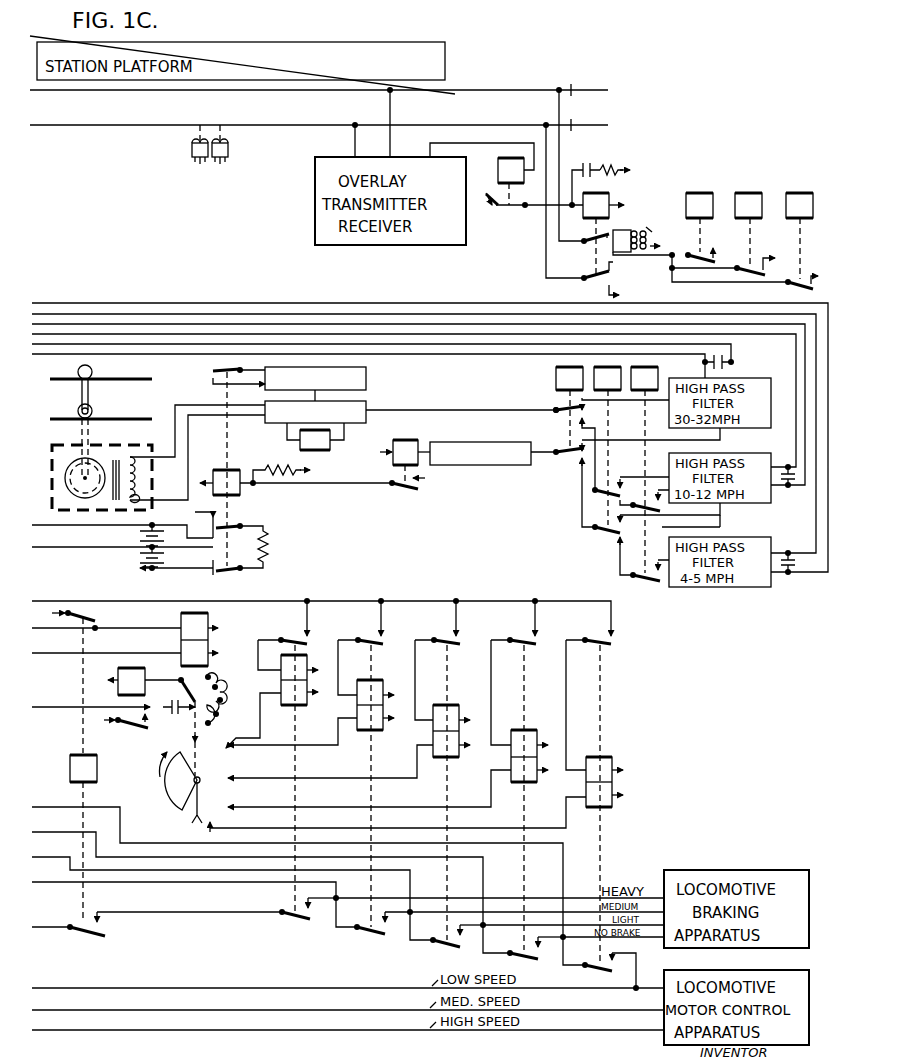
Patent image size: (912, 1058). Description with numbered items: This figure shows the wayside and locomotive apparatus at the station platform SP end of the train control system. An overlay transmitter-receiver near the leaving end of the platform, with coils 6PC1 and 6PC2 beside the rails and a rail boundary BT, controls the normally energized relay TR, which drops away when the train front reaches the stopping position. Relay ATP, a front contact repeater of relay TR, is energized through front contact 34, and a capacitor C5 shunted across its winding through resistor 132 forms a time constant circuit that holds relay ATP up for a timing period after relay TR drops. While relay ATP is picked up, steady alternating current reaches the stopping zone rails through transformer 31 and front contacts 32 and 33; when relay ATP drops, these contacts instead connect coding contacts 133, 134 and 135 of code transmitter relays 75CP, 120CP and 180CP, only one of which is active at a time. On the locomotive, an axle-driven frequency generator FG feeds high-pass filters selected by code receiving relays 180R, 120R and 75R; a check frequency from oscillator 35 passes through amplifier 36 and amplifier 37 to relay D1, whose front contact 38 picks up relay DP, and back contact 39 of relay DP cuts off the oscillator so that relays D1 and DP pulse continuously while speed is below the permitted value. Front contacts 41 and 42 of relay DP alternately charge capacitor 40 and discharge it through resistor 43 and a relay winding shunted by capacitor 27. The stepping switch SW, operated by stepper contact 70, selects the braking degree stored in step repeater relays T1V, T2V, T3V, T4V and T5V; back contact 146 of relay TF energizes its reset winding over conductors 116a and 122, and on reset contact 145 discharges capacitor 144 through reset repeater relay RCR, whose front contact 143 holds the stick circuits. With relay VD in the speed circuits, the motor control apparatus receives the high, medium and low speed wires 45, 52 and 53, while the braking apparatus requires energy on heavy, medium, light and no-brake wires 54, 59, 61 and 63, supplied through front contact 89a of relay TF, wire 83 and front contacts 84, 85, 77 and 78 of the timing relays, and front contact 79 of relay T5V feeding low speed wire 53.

The station platform SP is at (246, 60).
The track break / insulated joint BT is at (585, 124).
The platform coil 1 6PC1 is at (190, 150).
The platform coil 2 6PC2 is at (228, 150).
The relay TR is at (500, 162).
The front contact 34 is at (507, 208).
The capacitor C5 is at (584, 165).
The resistor 132 is at (609, 165).
The relay ATP is at (608, 200).
The front contact 32 is at (585, 244).
The front contact 33 is at (581, 282).
The transformer 31 is at (632, 236).
The code transmitter relay 75CP is at (706, 186).
The code transmitter relay 120CP is at (756, 186).
The code transmitter relay 180CP is at (806, 186).
The coding contact 133 is at (700, 252).
The coding contact 134 is at (750, 262).
The coding contact 135 is at (805, 276).
The frequency generator FG is at (120, 452).
The oscillator 35 is at (366, 377).
The amplifier 36 is at (366, 405).
The relay VD is at (316, 450).
The back contact 39 is at (212, 375).
The relay DP is at (230, 466).
The relay D1 is at (398, 444).
The front contact 38 is at (403, 490).
The amplifier 37 is at (466, 445).
The capacitor 27 is at (146, 536).
The capacitor 40 is at (164, 559).
The front contact 41 is at (233, 524).
The front contact 42 is at (228, 569).
The resistor 43 is at (270, 539).
The code receiving relay 120R is at (598, 372).
The code receiving relay 180R is at (556, 382).
The code receiving relay 75R is at (664, 369).
The conductor 116a is at (72, 598).
The back contact 146 is at (105, 619).
The conductor 122 is at (60, 654).
The stepping switch SW is at (206, 624).
The reset repeater relay RCR is at (142, 674).
The contact 145 is at (186, 692).
The front contact 143 is at (116, 730).
The capacitor 144 is at (205, 724).
The stepper contact 70 is at (168, 792).
The step repeater relay T1V is at (280, 680).
The step repeater relay T2V is at (372, 682).
The step repeater relay T3V is at (450, 707).
The step repeater relay T4V is at (526, 733).
The step repeater relay T5V is at (601, 760).
The relay TF is at (72, 755).
The no-braking wire 63 is at (42, 808).
The light braking wire 61 is at (42, 833).
The medium braking wire 59 is at (40, 858).
The heavy braking control wire 54 is at (40, 884).
The front contact 89a is at (112, 952).
The wire 83 is at (166, 914).
The front contact 84 is at (294, 915).
The front contact 85 is at (370, 930).
The front contact 77 is at (446, 943).
The front contact 78 is at (520, 952).
The front contact 79 is at (596, 964).
The low speed control wire 53 is at (70, 990).
The medium speed control wire 52 is at (70, 1012).
The high speed control wire 45 is at (70, 1032).